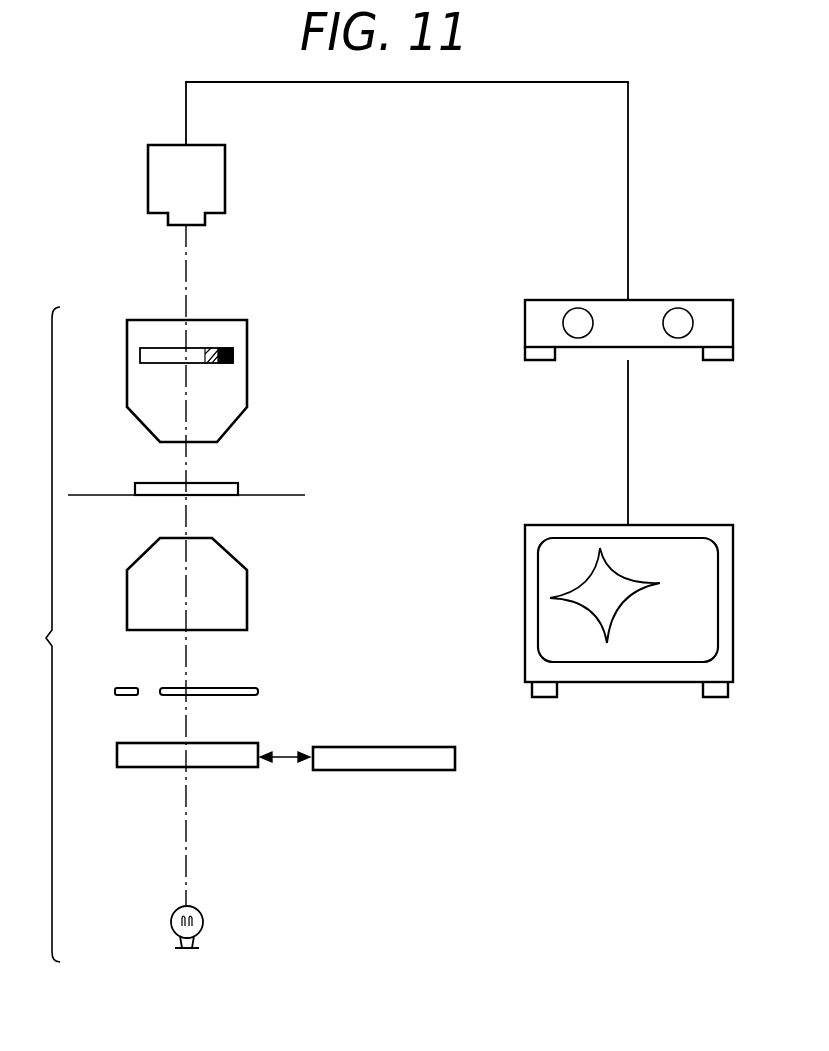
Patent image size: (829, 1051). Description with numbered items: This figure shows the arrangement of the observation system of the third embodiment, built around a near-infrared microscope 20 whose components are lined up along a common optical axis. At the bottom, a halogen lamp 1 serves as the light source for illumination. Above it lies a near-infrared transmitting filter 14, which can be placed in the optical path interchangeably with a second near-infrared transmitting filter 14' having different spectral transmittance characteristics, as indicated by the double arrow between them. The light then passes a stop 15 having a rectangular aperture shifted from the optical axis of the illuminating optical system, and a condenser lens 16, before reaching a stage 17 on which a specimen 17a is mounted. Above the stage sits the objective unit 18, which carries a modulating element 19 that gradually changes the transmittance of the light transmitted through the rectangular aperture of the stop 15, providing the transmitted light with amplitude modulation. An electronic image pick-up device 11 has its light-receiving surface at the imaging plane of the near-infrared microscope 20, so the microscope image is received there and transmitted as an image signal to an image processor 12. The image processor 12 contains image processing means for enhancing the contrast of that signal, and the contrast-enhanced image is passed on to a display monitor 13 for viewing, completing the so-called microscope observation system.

The halogen lamp 1 is at (175, 910).
The electronic image pick-up device 11 is at (218, 178).
The image processor 12 is at (530, 324).
The display monitor 13 is at (525, 598).
The near-infrared transmitting filter 14 is at (190, 758).
The near-infrared transmitting filter 14' is at (412, 757).
The stop 15 is at (122, 688).
The condenser lens 16 is at (137, 600).
The stage 17 is at (282, 494).
The specimen 17a is at (215, 482).
The objective unit 18 is at (138, 387).
The modulating element 19 is at (195, 352).
The near-infrared microscope 20 is at (35, 634).